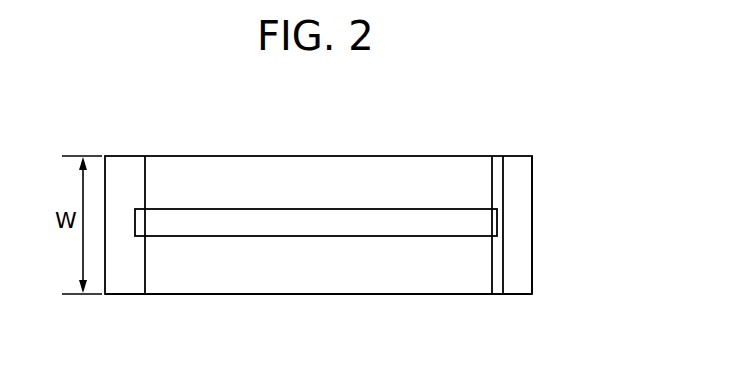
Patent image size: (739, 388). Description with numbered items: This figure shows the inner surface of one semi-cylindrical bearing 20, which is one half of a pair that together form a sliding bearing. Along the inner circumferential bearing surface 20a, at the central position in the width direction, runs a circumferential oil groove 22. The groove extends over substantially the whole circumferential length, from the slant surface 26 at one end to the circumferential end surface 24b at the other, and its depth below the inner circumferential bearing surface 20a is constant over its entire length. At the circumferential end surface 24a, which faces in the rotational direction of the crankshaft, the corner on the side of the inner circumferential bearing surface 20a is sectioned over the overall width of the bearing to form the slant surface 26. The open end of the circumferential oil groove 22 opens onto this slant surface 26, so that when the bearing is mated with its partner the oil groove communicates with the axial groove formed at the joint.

The semi-cylindrical bearing 20 is at (414, 146).
The inner circumferential bearing surface 20a is at (325, 270).
The circumferential oil groove 22 is at (268, 218).
The circumferential end surface 24a is at (517, 250).
The circumferential end surface 24b is at (127, 272).
The slant surface 26 is at (497, 176).